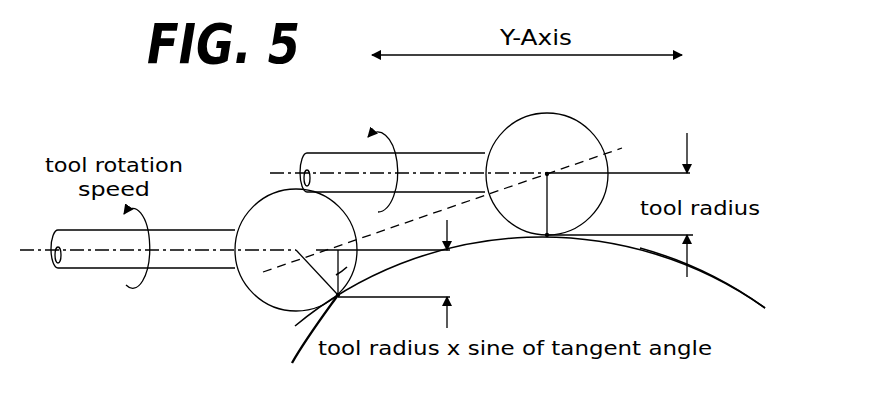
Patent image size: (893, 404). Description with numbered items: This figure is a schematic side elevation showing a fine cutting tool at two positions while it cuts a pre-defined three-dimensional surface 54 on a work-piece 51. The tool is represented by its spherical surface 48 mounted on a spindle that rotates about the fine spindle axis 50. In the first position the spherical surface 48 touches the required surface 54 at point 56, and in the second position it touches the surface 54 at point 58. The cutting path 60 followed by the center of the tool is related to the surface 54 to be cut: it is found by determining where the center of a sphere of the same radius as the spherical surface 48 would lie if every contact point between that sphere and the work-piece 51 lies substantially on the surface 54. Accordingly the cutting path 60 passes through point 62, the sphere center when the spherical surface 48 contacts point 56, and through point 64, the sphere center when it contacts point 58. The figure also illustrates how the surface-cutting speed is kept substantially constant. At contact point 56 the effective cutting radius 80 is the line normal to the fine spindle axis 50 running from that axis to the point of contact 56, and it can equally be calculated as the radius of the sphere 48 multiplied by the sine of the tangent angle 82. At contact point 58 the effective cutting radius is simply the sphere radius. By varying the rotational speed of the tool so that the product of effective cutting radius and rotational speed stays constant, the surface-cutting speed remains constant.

The fine cutting tool spherical surface 48 is at (242, 285).
The fine spindle axis 50 is at (143, 242).
The work-piece 51 is at (700, 307).
The pre-defined three-dimensional surface 54 is at (297, 325).
The contact point (first position) 56 is at (338, 297).
The contact point (second position) 58 is at (546, 238).
The cutting path 60 is at (597, 160).
The center point of sphere at first position 62 is at (296, 250).
The center point of sphere at second position 64 is at (545, 172).
The effective cutting radius 80 is at (342, 285).
The tangent angle 82 is at (307, 344).